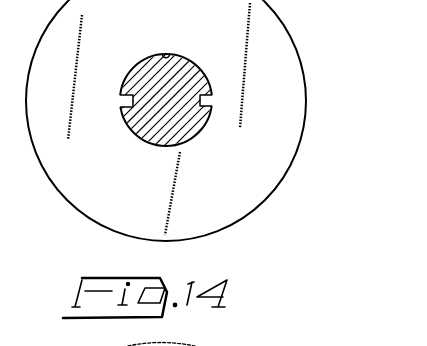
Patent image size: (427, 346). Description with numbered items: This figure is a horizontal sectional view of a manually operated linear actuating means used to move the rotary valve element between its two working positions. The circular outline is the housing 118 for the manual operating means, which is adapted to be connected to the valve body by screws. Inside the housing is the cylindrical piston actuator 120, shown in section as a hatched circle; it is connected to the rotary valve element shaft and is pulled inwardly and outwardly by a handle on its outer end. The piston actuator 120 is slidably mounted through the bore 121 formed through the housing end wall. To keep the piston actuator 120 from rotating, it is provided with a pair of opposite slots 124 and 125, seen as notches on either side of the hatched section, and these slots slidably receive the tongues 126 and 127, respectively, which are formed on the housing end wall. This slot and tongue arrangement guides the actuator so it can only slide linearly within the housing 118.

The housing 118 is at (269, 198).
The piston actuator 120 is at (185, 123).
The bore 121 is at (166, 53).
The slot 124 is at (128, 100).
The slot 125 is at (208, 97).
The tongue 126 is at (128, 104).
The tongue 127 is at (206, 100).